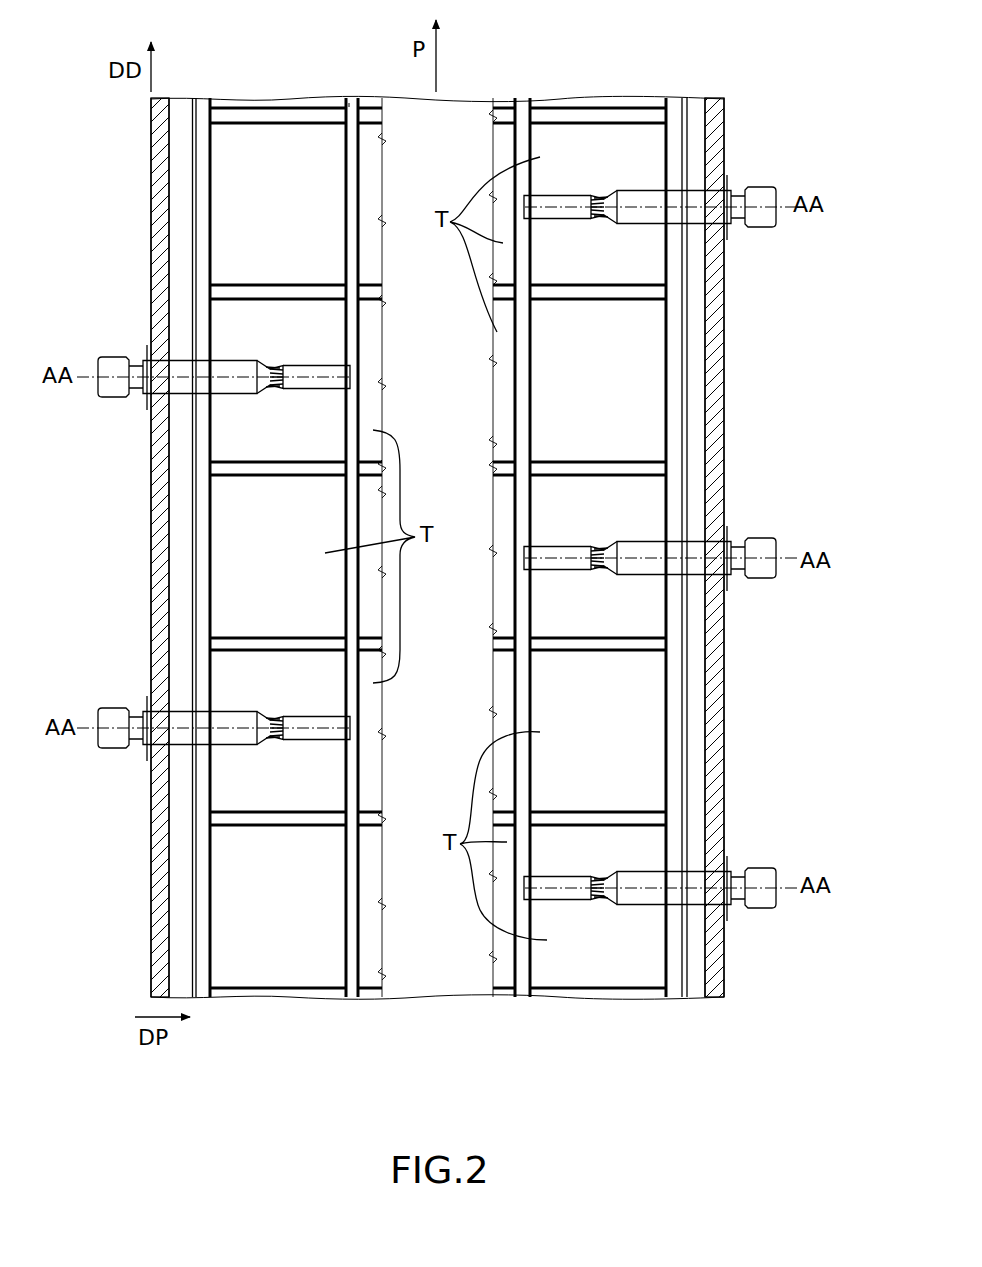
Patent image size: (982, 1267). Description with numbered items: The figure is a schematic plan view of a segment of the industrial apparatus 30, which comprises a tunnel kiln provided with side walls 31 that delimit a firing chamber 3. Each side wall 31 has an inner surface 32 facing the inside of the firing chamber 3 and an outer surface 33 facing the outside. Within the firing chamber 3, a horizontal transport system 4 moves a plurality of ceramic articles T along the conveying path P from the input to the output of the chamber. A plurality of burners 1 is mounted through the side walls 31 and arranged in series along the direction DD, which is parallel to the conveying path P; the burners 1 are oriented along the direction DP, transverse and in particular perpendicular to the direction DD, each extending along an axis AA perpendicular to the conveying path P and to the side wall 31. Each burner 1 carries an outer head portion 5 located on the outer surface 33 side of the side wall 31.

The burner 1 is at (439, 536).
The firing chamber 3 is at (503, 118).
The transport system 4 is at (348, 105).
The head of fastening device 5 is at (113, 397).
The industrial apparatus 30 is at (590, 1030).
The side wall 31 is at (150, 578).
The inner surface 32 is at (150, 503).
The outer surface 33 is at (173, 540).